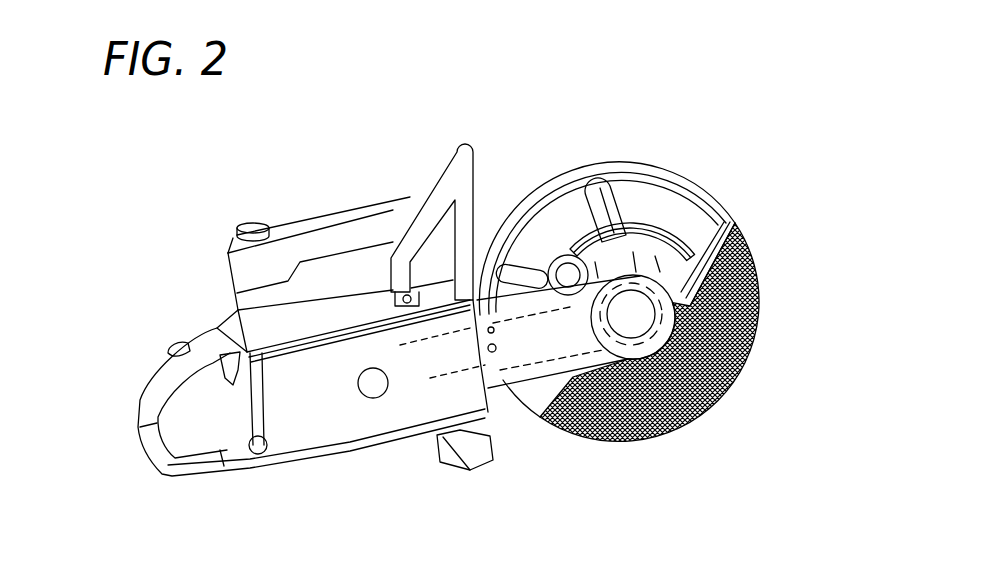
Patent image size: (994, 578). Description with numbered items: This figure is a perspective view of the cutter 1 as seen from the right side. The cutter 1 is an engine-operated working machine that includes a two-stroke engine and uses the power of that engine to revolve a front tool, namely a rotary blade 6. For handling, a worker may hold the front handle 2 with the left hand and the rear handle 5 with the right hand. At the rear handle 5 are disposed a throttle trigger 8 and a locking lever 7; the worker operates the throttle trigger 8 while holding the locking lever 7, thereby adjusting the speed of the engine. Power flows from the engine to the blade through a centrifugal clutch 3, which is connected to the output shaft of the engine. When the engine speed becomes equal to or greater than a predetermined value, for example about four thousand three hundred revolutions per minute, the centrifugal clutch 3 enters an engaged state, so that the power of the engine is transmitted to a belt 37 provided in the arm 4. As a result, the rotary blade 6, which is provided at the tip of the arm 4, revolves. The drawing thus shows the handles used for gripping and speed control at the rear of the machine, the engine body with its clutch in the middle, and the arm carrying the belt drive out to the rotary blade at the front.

The cutter 1 is at (797, 110).
The front handle 2 is at (447, 173).
The centrifugal clutch 3 is at (372, 400).
The arm 4 is at (547, 378).
The rear handle 5 is at (150, 398).
The rotary blade 6 is at (745, 370).
The locking lever 7 is at (172, 346).
The throttle trigger 8 is at (225, 375).
The belt 37 is at (432, 392).